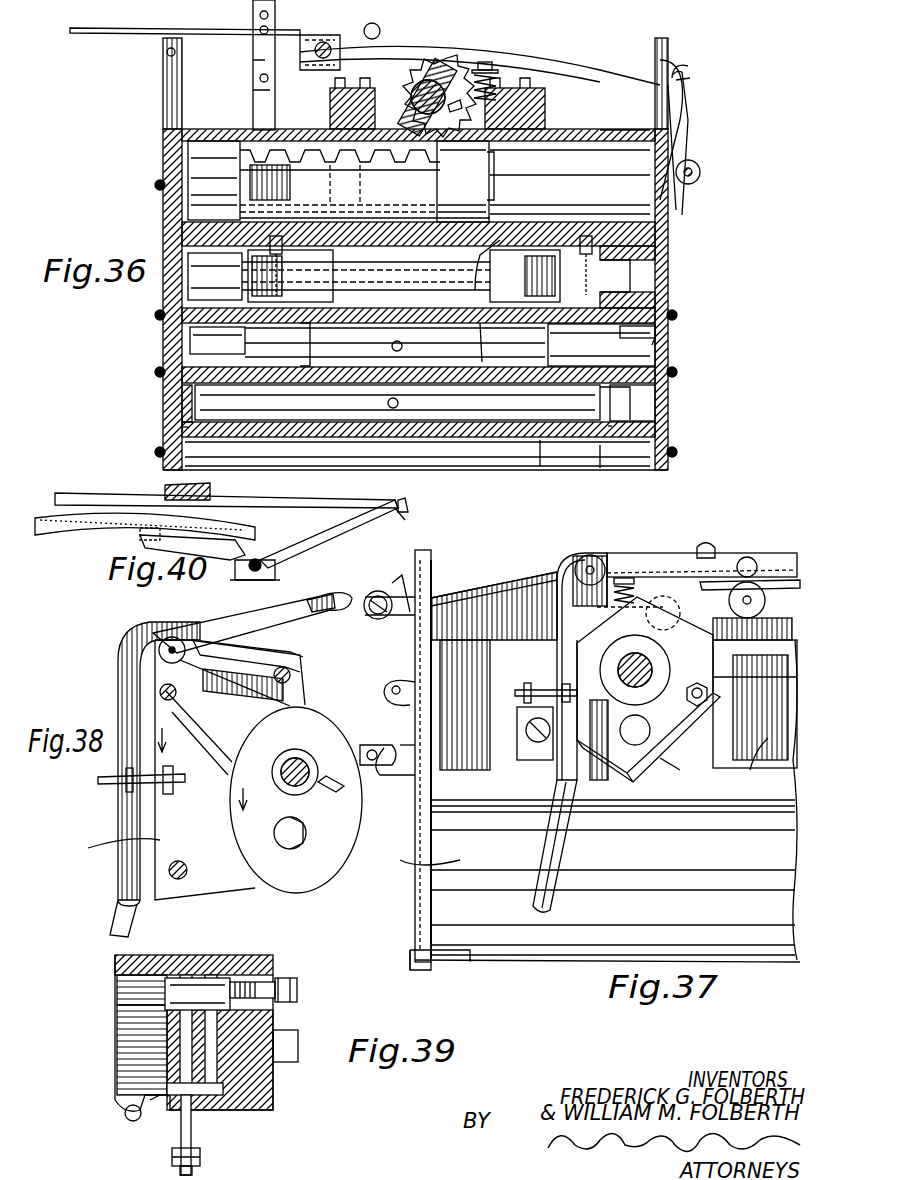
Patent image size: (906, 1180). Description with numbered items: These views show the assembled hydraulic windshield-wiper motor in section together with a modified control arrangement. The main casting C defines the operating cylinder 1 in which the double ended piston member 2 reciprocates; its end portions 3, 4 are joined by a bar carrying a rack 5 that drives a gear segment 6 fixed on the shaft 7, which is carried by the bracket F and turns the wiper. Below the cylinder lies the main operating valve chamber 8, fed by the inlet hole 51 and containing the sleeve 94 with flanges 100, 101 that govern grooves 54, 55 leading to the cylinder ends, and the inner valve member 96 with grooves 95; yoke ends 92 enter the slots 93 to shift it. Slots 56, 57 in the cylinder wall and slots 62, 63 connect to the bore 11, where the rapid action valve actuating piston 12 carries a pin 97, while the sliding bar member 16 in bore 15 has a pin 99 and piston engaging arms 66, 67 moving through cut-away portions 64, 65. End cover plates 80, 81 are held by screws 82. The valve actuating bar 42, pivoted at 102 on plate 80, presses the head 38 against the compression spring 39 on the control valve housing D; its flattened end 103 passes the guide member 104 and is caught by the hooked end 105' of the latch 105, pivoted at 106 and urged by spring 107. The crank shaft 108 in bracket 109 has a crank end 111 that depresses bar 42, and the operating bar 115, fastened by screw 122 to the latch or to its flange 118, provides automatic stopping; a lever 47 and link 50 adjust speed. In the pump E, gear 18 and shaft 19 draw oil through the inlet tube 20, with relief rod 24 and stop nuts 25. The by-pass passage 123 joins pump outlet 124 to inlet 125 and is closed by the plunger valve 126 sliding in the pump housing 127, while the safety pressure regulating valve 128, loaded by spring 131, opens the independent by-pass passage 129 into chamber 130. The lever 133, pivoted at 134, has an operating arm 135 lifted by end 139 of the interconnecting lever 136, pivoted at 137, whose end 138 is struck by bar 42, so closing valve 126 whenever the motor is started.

In FIG. 36, the operating cylinder 1 is at (680, 205).
In FIG. 36, the double ended piston member 2 is at (365, 194).
In FIG. 36, the end portion of piston 3 is at (200, 143).
In FIG. 36, the end portion of piston 4 is at (490, 150).
In FIG. 36, the rack 5 is at (300, 140).
In FIG. 36, the gear segment 6 is at (398, 85).
In FIG. 37, the gear segment 6 is at (752, 629).
In FIG. 36, the shaft 7 is at (430, 80).
In FIG. 37, the shaft 7 is at (648, 600).
In FIG. 36, the main operating valve chamber 8 is at (640, 248).
In FIG. 36, the bore 11 is at (665, 348).
In FIG. 36, the rapid action valve actuating piston 12 is at (600, 336).
In FIG. 36, the bore 15 is at (630, 422).
In FIG. 36, the sliding bar member 16 is at (397, 402).
In FIG. 39, the pump gear 18 is at (140, 1035).
In FIG. 37, the pump shaft 19 is at (670, 665).
In FIG. 38, the inlet tube 20 is at (112, 915).
In FIG. 37, the inlet tube 20 is at (560, 866).
In FIG. 37, the rod 24 is at (703, 692).
In FIG. 37, the stop nuts 25 is at (708, 700).
In FIG. 36, the head 38 is at (470, 70).
In FIG. 37, the head 38 is at (622, 578).
In FIG. 36, the compression spring 39 is at (486, 84).
In FIG. 38, the compression spring 39 is at (205, 756).
In FIG. 37, the compression spring 39 is at (628, 586).
In FIG. 36, the valve actuating bar 42 is at (520, 60).
In FIG. 40, the valve actuating bar 42 is at (72, 535).
In FIG. 37, the valve actuating bar 42 is at (535, 583).
In FIG. 36, the lever 47 is at (253, 8).
In FIG. 36, the connecting link 50 is at (160, 30).
In FIG. 36, the inlet hole 51 is at (366, 275).
In FIG. 36, the groove 54 is at (500, 240).
In FIG. 36, the groove 55 is at (340, 175).
In FIG. 36, the slot 56 is at (495, 168).
In FIG. 36, the slot 57 is at (340, 188).
In FIG. 36, the slot 62 is at (660, 326).
In FIG. 36, the slot 63 is at (217, 342).
In FIG. 36, the cut-away portion 64 is at (672, 378).
In FIG. 36, the cut-away portion 65 is at (178, 428).
In FIG. 36, the piston engaging arm 66 is at (610, 427).
In FIG. 36, the piston engaging arm 67 is at (178, 400).
In FIG. 36, the end cover plate 80 is at (165, 135).
In FIG. 36, the end cover plate 81 is at (668, 272).
In FIG. 37, the end cover plate 81 is at (428, 912).
In FIG. 36, the screws 82 is at (160, 372).
In FIG. 37, the screws 82 is at (412, 955).
In FIG. 36, the yoke ends 92 is at (300, 320).
In FIG. 36, the slots 93 is at (404, 276).
In FIG. 36, the main valve sleeve member 94 is at (395, 340).
In FIG. 36, the grooves 95 is at (258, 246).
In FIG. 36, the inner valve member 96 is at (187, 272).
In FIG. 36, the pin 97 is at (402, 345).
In FIG. 36, the pin 99 is at (388, 403).
In FIG. 36, the flange 100 is at (330, 325).
In FIG. 36, the flange 101 is at (490, 325).
In FIG. 36, the pivot 102 is at (166, 52).
In FIG. 36, the flattened end 103 is at (691, 78).
In FIG. 36, the guide member 104 is at (668, 45).
In FIG. 37, the guide member 104 is at (431, 565).
In FIG. 36, the latch 105 is at (705, 143).
In FIG. 36, the hooked end 105' is at (707, 59).
In FIG. 36, the pivot 106 is at (690, 168).
In FIG. 37, the pivot 106 is at (388, 686).
In FIG. 37, the spring 107 is at (410, 770).
In FIG. 36, the crank shaft 108 is at (326, 46).
In FIG. 36, the bracket 109 is at (305, 35).
In FIG. 36, the crank end 111 is at (377, 28).
In FIG. 37, the crank end 111 is at (705, 552).
In FIG. 37, the operating bar 115 is at (440, 638).
In FIG. 37, the projecting flange 118 is at (392, 778).
In FIG. 37, the screw 122 is at (378, 620).
In FIG. 39, the by-pass passage 123 is at (188, 975).
In FIG. 39, the pump outlet 124 is at (135, 990).
In FIG. 39, the pump inlet 125 is at (125, 1118).
In FIG. 38, the plunger valve 126 is at (172, 782).
In FIG. 37, the plunger valve 126 is at (545, 688).
In FIG. 39, the plunger valve 126 is at (200, 1100).
In FIG. 39, the pump housing 127 is at (158, 1110).
In FIG. 39, the safety pressure regulating valve 128 is at (215, 990).
In FIG. 39, the independent by-pass passage 129 is at (240, 1032).
In FIG. 39, the chamber 130 is at (223, 1090).
In FIG. 39, the spring 131 is at (280, 972).
In FIG. 38, the lever 133 is at (118, 700).
In FIG. 37, the lever 133 is at (560, 630).
In FIG. 39, the lever 133 is at (202, 1154).
In FIG. 38, the pivot 134 is at (175, 640).
In FIG. 37, the pivot 134 is at (590, 565).
In FIG. 40, the operating arm 135 is at (280, 500).
In FIG. 38, the operating arm 135 is at (300, 615).
In FIG. 37, the operating arm 135 is at (670, 548).
In FIG. 40, the interconnecting lever 136 is at (315, 527).
In FIG. 37, the interconnecting lever 136 is at (785, 590).
In FIG. 40, the pivot 137 is at (262, 565).
In FIG. 37, the pivot 137 is at (750, 606).
In FIG. 40, the lever end 138 is at (150, 545).
In FIG. 37, the lever end 138 is at (692, 543).
In FIG. 40, the lever end 139 is at (402, 515).
In FIG. 36, the main casting C is at (622, 116).
In FIG. 37, the main casting C is at (418, 851).
In FIG. 37, the control valve housing D is at (757, 766).
In FIG. 38, the pump E is at (110, 850).
In FIG. 37, the pump E is at (676, 771).
In FIG. 36, the wiper arm operating shaft supporting bracket F is at (530, 118).